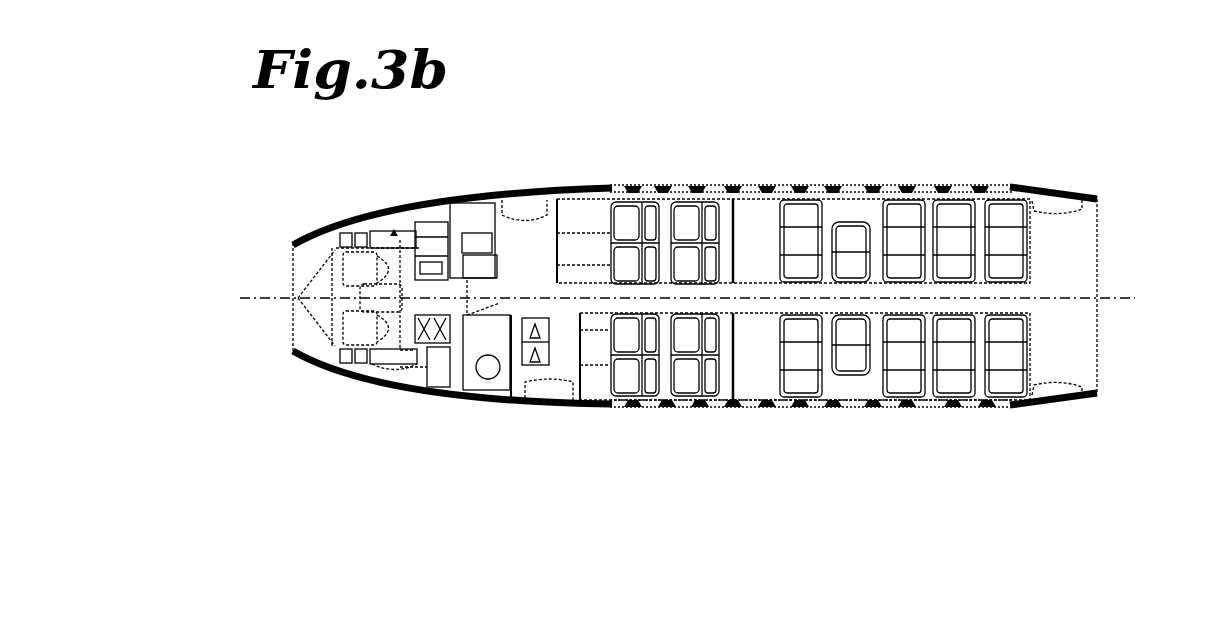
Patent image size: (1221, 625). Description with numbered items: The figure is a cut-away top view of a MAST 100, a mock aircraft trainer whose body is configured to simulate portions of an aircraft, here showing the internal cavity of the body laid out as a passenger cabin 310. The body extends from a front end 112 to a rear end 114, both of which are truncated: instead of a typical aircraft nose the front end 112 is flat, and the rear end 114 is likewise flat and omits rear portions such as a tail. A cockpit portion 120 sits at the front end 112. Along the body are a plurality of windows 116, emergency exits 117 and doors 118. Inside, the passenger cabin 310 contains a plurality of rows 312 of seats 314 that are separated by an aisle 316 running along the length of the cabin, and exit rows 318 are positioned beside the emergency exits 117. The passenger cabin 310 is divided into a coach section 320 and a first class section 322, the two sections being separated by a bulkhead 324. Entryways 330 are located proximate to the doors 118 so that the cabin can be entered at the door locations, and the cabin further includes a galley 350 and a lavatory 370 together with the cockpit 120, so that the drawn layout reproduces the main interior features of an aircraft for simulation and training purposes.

The MAST 100 is at (638, 108).
The front end 112 is at (293, 262).
The rear end 114 is at (1097, 262).
The windows 116 is at (970, 188).
The emergency exits 117 is at (858, 188).
The doors 118 is at (520, 190).
The cockpit portion 120 is at (398, 210).
The passenger cabin 310 is at (753, 216).
The rows 312 is at (663, 206).
The seats 314 is at (1028, 240).
The aisle 316 is at (1012, 299).
The exit rows 318 is at (858, 211).
The coach section 320 is at (748, 410).
The first class section 322 is at (589, 218).
The bulkhead 324 is at (740, 250).
The entryways 330 is at (1085, 227).
The galley 350 is at (472, 212).
The lavatory 370 is at (475, 374).